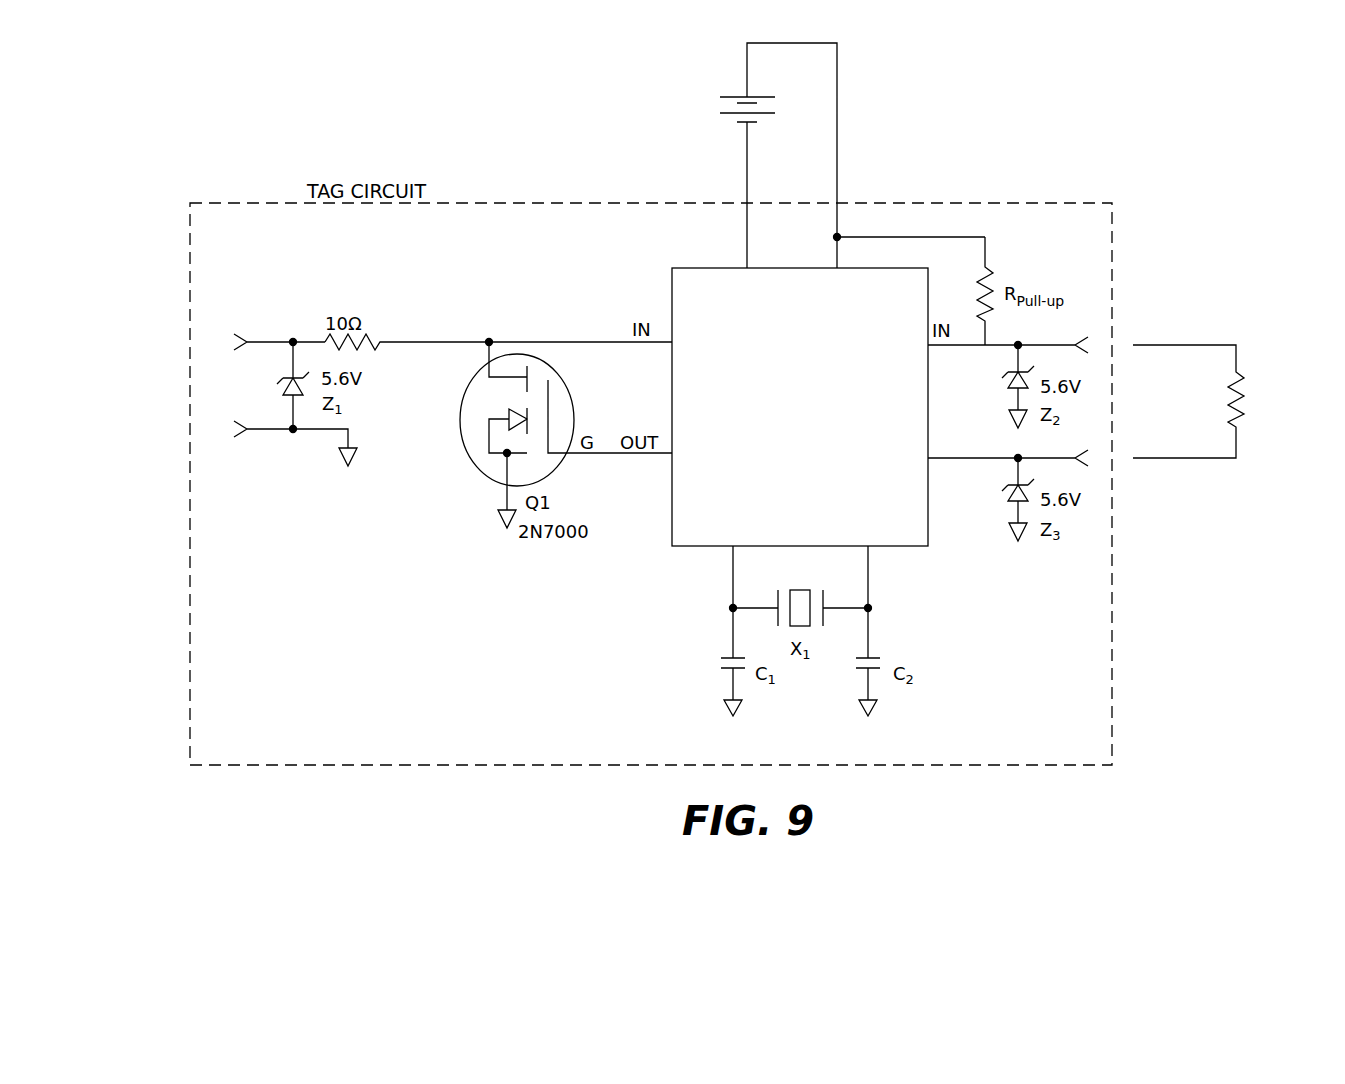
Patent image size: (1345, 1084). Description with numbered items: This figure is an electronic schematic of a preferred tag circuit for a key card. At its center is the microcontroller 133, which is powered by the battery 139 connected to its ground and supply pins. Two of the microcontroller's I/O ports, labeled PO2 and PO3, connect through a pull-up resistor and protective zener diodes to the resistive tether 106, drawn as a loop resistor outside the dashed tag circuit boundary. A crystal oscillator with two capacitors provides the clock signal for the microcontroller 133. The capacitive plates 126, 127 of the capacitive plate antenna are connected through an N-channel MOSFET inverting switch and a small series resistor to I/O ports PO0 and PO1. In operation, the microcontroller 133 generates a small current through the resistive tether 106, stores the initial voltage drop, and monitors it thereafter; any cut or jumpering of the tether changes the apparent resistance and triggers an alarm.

The contact plate 127 is at (237, 332).
The contact plate 126 is at (236, 452).
The battery 139 is at (727, 120).
The microcontroller 133 is at (904, 285).
The resistive tether 106 is at (1192, 328).